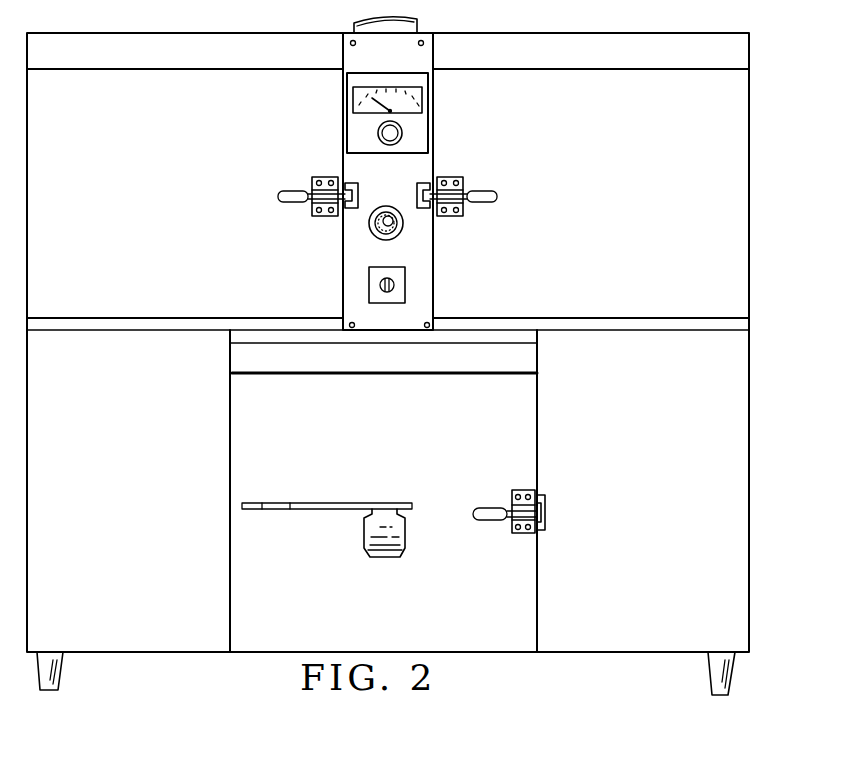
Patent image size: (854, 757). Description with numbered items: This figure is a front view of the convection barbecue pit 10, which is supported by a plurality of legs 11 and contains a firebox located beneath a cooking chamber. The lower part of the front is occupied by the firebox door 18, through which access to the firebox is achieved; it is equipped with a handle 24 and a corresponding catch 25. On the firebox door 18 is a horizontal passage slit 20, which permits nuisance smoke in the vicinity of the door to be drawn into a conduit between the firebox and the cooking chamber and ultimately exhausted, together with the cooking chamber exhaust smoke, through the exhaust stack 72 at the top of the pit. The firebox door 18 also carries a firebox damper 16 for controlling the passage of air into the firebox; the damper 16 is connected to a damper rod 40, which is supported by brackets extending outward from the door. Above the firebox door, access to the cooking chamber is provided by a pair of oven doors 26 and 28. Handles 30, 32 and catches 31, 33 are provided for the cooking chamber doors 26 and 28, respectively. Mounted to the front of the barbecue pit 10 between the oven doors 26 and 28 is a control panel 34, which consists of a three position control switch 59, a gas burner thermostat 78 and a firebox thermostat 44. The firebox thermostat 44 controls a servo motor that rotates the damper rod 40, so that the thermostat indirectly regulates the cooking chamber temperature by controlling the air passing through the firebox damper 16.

The convection barbecue pit 10 is at (767, 93).
The legs 11 is at (730, 675).
The firebox damper 16 is at (405, 542).
The firebox door 18 is at (538, 460).
The horizontal passage slit 20 is at (268, 375).
The handle 24 is at (490, 508).
The catch 25 is at (545, 511).
The oven door 26 is at (606, 237).
The oven door 28 is at (162, 243).
The handle 30 is at (519, 184).
The catch 31 is at (424, 183).
The handle 32 is at (280, 195).
The catch 33 is at (355, 183).
The control panel 34 is at (420, 52).
The damper rod 40 is at (318, 493).
The firebox thermostat 44 is at (429, 117).
The three position control switch 59 is at (407, 283).
The exhaust stack 72 is at (356, 22).
The gas burner thermostat 78 is at (380, 240).